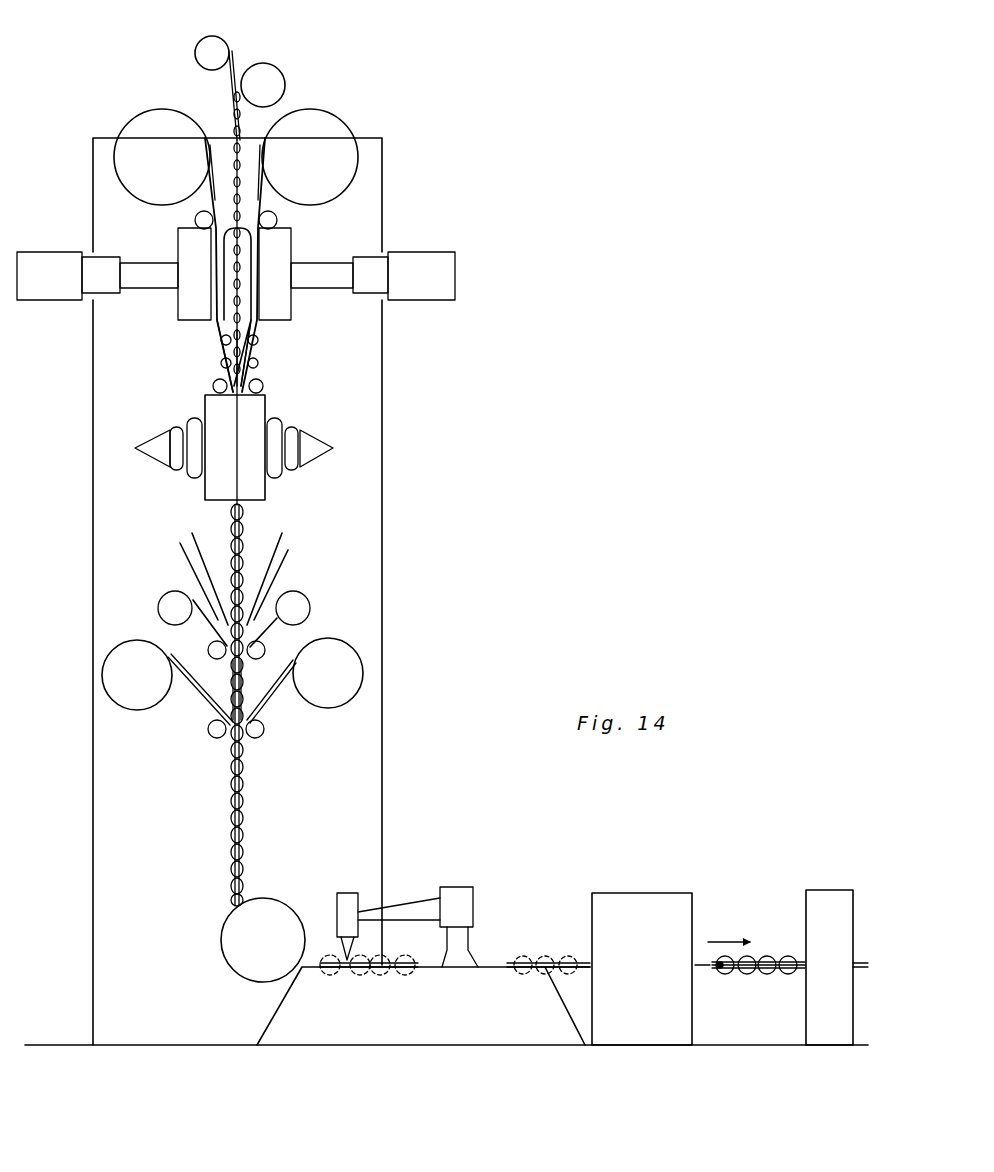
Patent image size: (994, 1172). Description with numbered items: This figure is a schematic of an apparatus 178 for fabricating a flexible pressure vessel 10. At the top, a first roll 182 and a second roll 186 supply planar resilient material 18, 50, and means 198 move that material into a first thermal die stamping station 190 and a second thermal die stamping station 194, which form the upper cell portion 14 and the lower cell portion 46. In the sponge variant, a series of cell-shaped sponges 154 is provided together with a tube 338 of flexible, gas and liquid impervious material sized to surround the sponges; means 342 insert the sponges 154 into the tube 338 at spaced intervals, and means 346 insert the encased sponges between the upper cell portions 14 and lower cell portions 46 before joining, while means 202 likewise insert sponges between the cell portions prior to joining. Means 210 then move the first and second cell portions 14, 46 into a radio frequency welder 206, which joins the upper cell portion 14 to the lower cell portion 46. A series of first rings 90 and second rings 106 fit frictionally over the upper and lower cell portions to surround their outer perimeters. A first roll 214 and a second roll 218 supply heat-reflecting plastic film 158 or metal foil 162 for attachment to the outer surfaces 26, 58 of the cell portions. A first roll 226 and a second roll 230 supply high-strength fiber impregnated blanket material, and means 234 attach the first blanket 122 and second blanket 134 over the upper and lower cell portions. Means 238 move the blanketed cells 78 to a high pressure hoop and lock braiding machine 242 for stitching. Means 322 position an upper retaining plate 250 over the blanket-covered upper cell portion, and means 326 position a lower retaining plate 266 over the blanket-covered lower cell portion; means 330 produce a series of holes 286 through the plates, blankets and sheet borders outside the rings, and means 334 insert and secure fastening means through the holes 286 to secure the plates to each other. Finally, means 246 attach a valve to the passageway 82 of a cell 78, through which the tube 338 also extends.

The flexible pressure vessel 10 is at (765, 999).
The upper cell portion 14 is at (218, 348).
The planar resilient material 18 is at (208, 192).
The outer surface 26 is at (230, 683).
The lower cell portion 46 is at (250, 368).
The planar resilient material 50 is at (262, 196).
The outer surface 58 is at (242, 683).
The cell 78 is at (768, 957).
The passageway 82 is at (802, 960).
The first ring 90 is at (188, 558).
The second ring 106 is at (252, 590).
The first blanket 122 is at (230, 765).
The second blanket 134 is at (246, 775).
The cell-shaped sponges 154 is at (242, 113).
The heat-reflecting plastic film 158 is at (200, 635).
The metal foil 162 is at (268, 633).
The apparatus 178 is at (442, 161).
The first roll 182 is at (148, 137).
The second roll 186 is at (340, 134).
The first thermal die stamping station 190 is at (185, 308).
The second thermal die stamping station 194 is at (248, 333).
The means for moving resilient material 198 is at (196, 220).
The means for inserting cell-shaped sponges 202 is at (252, 357).
The radio frequency welder 206 is at (253, 415).
The means for moving cell portions 210 is at (265, 386).
The first roll of film or foil 214 is at (167, 603).
The second roll of film or foil 218 is at (307, 613).
The first roll of blanket material 226 is at (130, 700).
The second roll of blanket material 230 is at (348, 675).
The means for attaching blankets 234 is at (418, 913).
The means for moving blanketed cells 238 is at (273, 913).
The high pressure hoop and lock braiding machine 242 is at (465, 903).
The means for attaching a valve 246 is at (823, 1037).
The upper retaining plate 250 is at (717, 960).
The lower retaining plate 266 is at (722, 973).
The holes 286 is at (735, 973).
The means for positioning upper retaining plate 322 is at (608, 913).
The means for positioning lower retaining plate 326 is at (662, 1013).
The means for producing holes 330 is at (612, 997).
The means for inserting and securing fastening means 334 is at (658, 908).
The tube 338 is at (237, 113).
The means for inserting sponges in tube 342 is at (291, 314).
The means for inserting encased sponges 346 is at (218, 328).